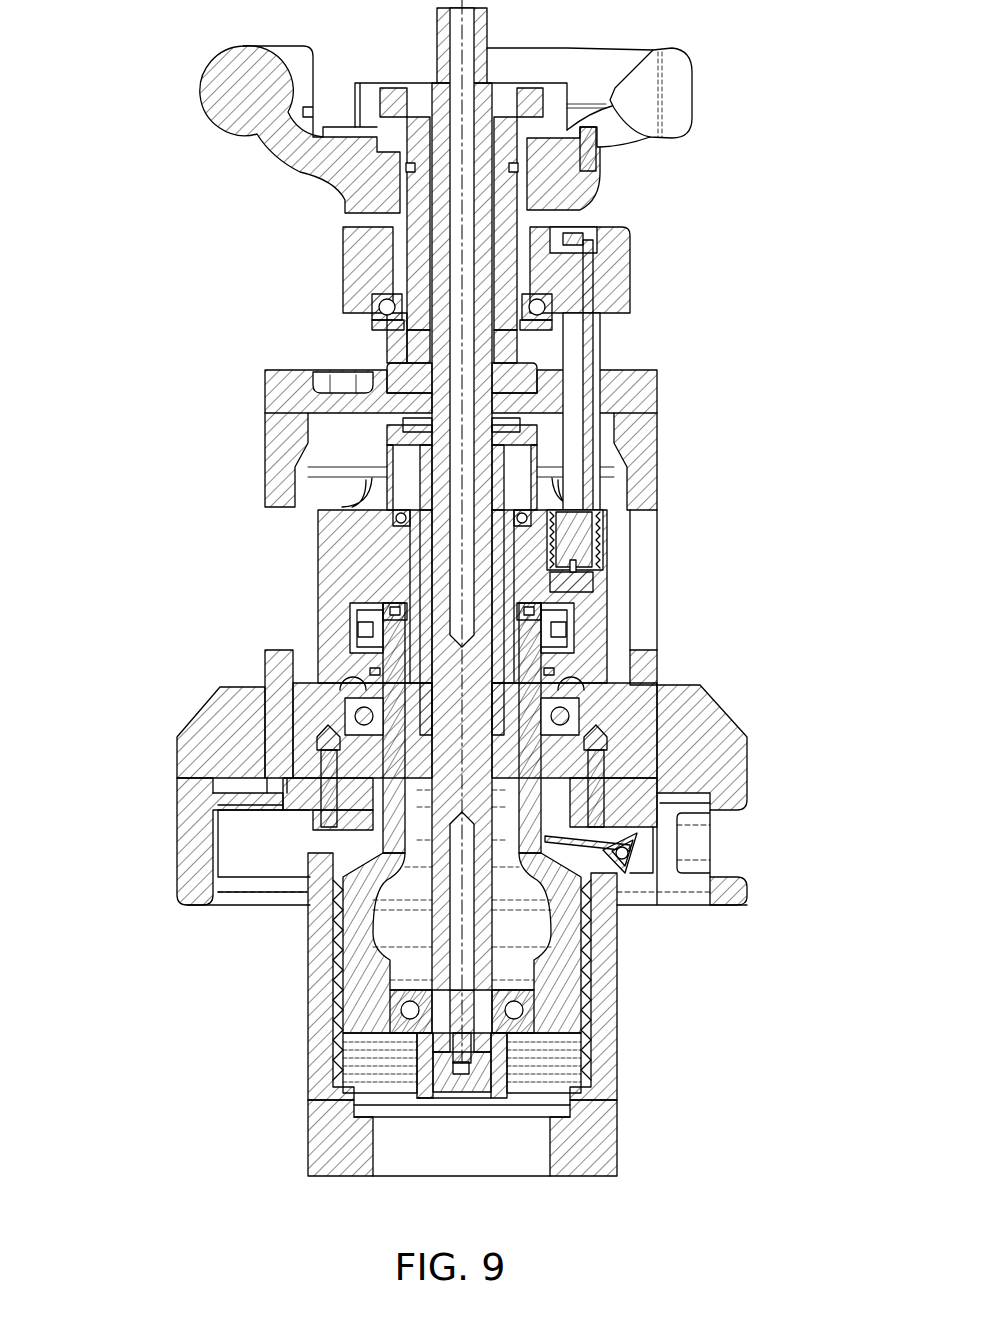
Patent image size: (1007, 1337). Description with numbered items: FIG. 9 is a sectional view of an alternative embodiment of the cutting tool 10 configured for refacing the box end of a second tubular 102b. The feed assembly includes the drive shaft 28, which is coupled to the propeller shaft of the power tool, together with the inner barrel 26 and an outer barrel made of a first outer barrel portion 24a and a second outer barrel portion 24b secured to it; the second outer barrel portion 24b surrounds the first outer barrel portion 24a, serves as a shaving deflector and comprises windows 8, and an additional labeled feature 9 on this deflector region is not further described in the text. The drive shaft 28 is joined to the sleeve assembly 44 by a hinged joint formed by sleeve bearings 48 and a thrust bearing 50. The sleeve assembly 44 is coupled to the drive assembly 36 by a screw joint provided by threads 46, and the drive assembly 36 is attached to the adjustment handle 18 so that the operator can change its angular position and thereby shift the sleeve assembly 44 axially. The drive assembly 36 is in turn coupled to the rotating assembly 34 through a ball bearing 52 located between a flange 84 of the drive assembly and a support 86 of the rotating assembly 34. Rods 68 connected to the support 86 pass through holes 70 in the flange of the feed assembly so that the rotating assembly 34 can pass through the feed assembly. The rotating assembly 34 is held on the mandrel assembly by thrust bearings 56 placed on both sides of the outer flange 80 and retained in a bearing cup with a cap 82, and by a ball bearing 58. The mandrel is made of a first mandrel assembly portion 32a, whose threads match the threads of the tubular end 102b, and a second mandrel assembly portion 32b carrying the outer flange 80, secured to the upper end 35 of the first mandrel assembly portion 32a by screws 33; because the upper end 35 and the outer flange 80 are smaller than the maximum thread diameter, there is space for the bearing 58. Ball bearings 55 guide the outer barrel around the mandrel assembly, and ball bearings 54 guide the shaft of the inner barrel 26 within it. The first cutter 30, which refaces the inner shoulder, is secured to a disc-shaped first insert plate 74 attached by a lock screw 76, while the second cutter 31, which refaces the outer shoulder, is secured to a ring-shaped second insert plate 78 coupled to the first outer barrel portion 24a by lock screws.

The cutting tool 10 is at (152, 47).
The drive shaft 28 is at (440, 60).
The sleeve bearings 48 is at (515, 110).
The adjustment handle 18 is at (682, 104).
The sleeve assembly 44 is at (395, 235).
The threads 46 is at (550, 245).
The drive assembly 36 is at (398, 270).
The ball bearing 52 is at (578, 262).
The support 86 is at (618, 270).
The flange 84 is at (376, 320).
The rods 68 is at (596, 342).
The thrust bearing 50 is at (420, 350).
The holes 70 is at (620, 386).
The ball bearing 58 is at (562, 530).
The ball bearings 54 is at (392, 520).
The section view indicator 9 is at (683, 543).
The rotating assembly 34 is at (330, 565).
The second mandrel assembly portion 32b is at (415, 578).
The thrust bearings 56 is at (560, 628).
The outer flange 80 is at (568, 660).
The screws 33 is at (395, 625).
The cap 82 is at (636, 688).
The upper end 35 is at (330, 700).
The ball bearings 55 is at (690, 715).
The first outer barrel portion 24a is at (262, 705).
The second outer barrel portion 24b is at (205, 785).
The windows 8 is at (757, 843).
The second insert plate 78 is at (305, 805).
The second cutter 31 is at (630, 874).
The first mandrel assembly portion 32a is at (360, 975).
The inner barrel 26 is at (540, 945).
The second tubular 102b is at (600, 1115).
The first cutter 30 is at (415, 1120).
The lock screw 76 is at (468, 1095).
The first insert plate 74 is at (415, 1070).